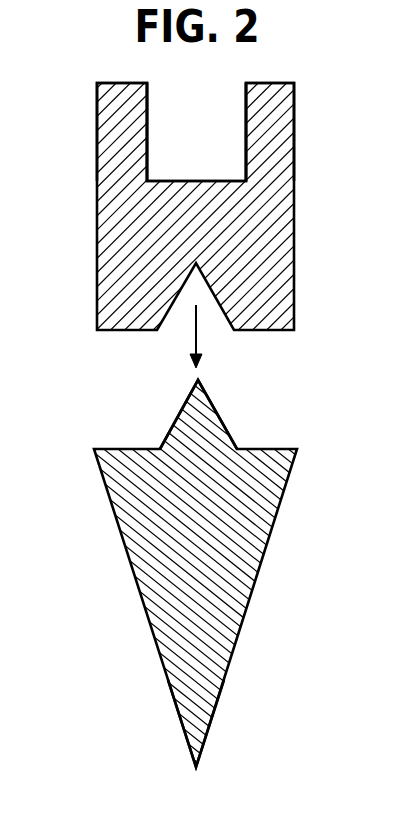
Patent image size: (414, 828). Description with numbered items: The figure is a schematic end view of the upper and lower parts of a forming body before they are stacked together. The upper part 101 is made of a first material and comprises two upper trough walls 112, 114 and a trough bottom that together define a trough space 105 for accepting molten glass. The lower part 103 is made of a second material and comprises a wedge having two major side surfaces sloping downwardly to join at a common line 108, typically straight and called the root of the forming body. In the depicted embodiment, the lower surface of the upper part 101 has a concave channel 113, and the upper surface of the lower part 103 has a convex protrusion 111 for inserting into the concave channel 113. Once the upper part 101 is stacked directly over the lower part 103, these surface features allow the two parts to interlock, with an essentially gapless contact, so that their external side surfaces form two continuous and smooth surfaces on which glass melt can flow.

The upper part 101 is at (287, 276).
The trough space 105 is at (185, 136).
The upper trough wall 112 is at (112, 138).
The upper trough wall 114 is at (287, 128).
The concave channel 113 is at (217, 330).
The lower part 103 is at (267, 523).
The convex protrusion 111 is at (215, 438).
The common line 108 is at (197, 766).